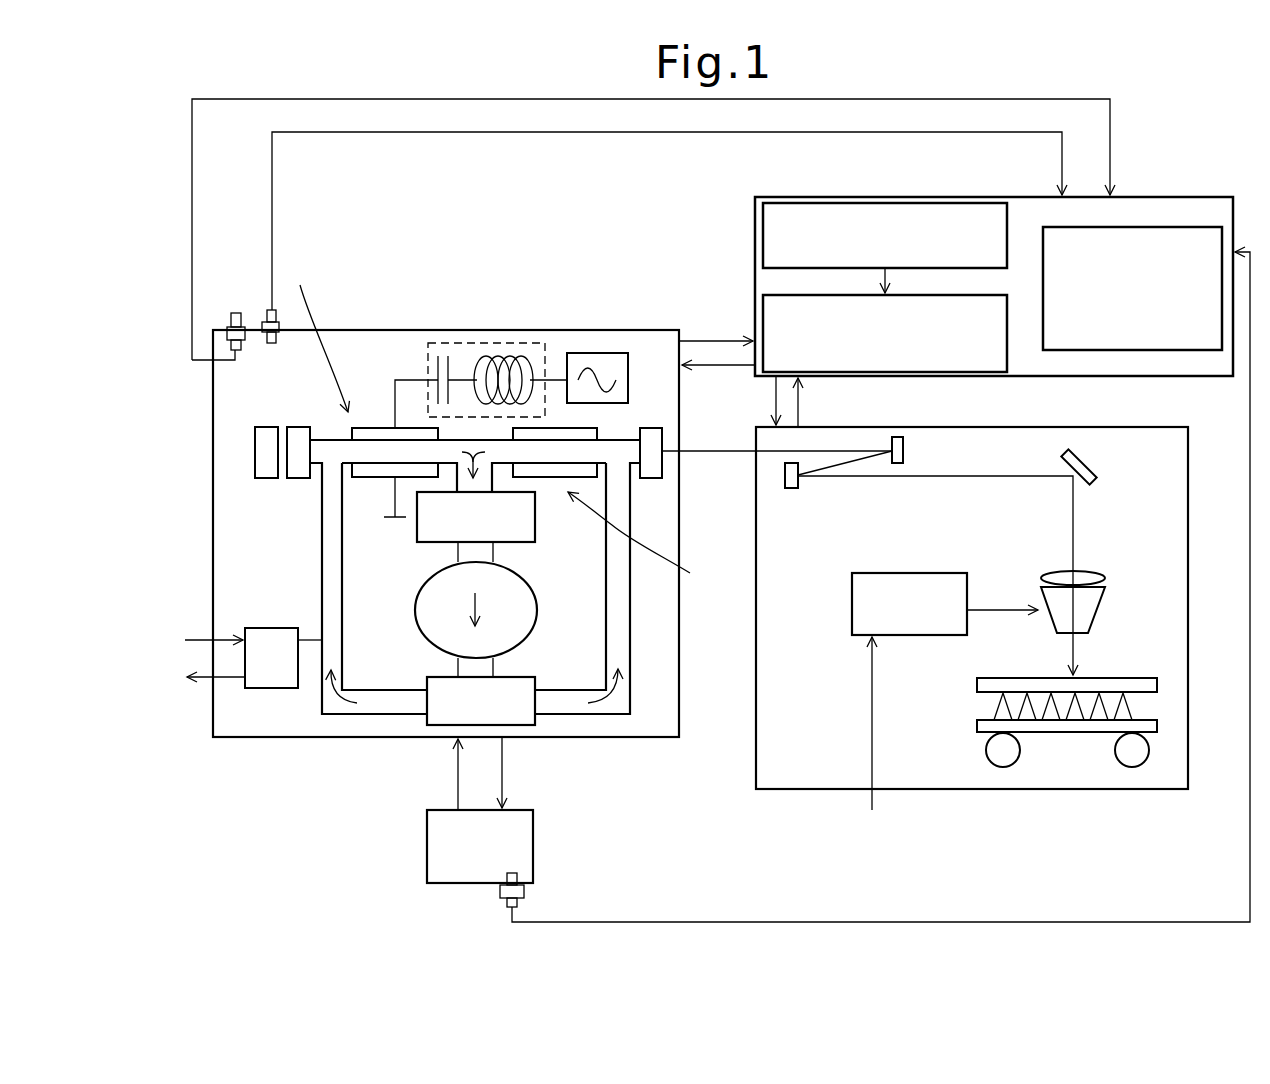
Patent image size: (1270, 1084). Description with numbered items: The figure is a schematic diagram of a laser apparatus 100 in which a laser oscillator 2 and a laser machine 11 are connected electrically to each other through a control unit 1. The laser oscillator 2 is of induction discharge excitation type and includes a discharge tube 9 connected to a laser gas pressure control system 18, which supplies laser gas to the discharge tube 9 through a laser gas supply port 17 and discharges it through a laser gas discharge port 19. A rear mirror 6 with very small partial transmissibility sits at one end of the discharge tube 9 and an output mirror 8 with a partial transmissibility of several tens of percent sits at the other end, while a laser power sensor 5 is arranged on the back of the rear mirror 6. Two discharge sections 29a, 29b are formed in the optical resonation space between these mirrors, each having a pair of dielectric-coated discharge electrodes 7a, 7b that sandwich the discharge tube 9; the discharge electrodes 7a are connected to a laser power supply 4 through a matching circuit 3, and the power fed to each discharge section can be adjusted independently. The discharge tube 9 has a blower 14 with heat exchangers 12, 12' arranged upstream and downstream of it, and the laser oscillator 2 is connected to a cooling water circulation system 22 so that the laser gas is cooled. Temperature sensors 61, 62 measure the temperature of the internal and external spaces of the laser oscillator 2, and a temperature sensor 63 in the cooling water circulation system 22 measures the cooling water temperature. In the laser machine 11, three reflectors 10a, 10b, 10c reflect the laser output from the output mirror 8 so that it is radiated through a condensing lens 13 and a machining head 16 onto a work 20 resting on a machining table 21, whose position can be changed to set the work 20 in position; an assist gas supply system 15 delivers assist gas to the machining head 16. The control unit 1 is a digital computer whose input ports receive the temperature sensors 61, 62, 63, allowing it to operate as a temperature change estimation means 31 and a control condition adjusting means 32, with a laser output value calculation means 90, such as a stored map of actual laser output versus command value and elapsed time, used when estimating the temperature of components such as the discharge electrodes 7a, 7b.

The laser apparatus 100 is at (1070, 88).
The control unit 1 is at (975, 197).
The temperature change estimation means 31 is at (807, 272).
The control condition adjusting means 32 is at (958, 298).
The laser output value calculation means 90 is at (1166, 228).
The laser oscillator 2 is at (337, 330).
The matching circuit 3 is at (482, 343).
The laser power supply 4 is at (600, 353).
The laser power sensor 5 is at (266, 427).
The rear mirror 6 is at (298, 427).
The discharge electrode 7a is at (378, 428).
The discharge electrode 7b is at (588, 428).
The output mirror 8 is at (663, 465).
The discharge tube 9 is at (330, 538).
The reflector 10a is at (900, 437).
The reflector 10b is at (790, 488).
The reflector 10c is at (1082, 452).
The laser machine 11 is at (1138, 427).
The heat exchanger 12 is at (502, 527).
The heat exchanger 12' is at (522, 736).
The condensing lens 13 is at (1090, 572).
The blower 14 is at (537, 622).
The assist gas supply system 15 is at (914, 573).
The machining head 16 is at (1100, 608).
The laser gas supply port 17 is at (213, 638).
The laser gas pressure control system 18 is at (273, 628).
The laser gas discharge port 19 is at (212, 678).
The work 20 is at (1142, 678).
The machining table 21 is at (1158, 724).
The cooling water circulation system 22 is at (427, 845).
The discharge section 29a is at (315, 335).
The discharge section 29b is at (652, 548).
The temperature sensor 61 is at (268, 310).
The temperature sensor 62 is at (233, 313).
The temperature sensor 63 is at (524, 890).